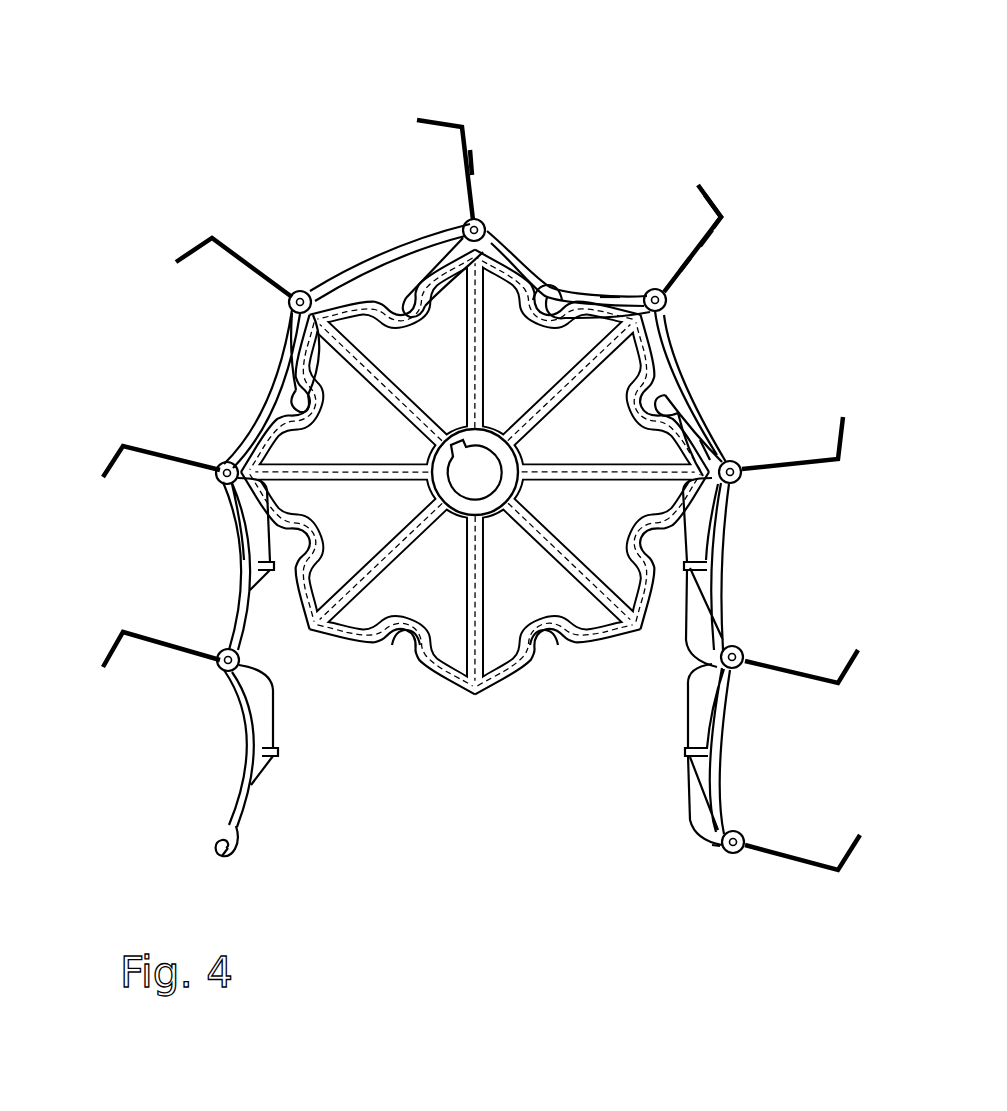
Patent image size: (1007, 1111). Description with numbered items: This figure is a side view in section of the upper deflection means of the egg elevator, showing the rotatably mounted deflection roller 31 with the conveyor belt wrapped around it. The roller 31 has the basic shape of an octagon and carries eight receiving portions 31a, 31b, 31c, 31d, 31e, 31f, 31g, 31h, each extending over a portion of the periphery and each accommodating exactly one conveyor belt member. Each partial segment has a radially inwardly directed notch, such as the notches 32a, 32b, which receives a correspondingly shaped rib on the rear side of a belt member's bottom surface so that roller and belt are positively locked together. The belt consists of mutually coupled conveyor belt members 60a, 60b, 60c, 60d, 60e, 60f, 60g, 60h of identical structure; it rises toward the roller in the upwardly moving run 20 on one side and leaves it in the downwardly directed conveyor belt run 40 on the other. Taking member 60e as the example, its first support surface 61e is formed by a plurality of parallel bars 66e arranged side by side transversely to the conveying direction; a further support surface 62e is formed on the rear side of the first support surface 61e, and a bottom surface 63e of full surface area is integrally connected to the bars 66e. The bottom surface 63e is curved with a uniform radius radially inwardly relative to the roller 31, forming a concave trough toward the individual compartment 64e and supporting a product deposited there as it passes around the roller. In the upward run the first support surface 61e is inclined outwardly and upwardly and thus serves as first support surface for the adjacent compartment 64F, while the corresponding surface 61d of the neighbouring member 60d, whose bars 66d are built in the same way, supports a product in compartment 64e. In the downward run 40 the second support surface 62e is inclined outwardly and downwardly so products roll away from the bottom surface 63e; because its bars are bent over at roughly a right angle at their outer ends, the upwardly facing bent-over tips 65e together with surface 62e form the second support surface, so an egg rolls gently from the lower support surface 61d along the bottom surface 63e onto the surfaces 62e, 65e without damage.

The first linkage assembly 20 is at (213, 864).
The downwardly directed conveyor belt run 40 is at (690, 856).
The deflection roller 31 is at (338, 624).
The receiving portion 31a is at (426, 585).
The receiving portion 31b is at (355, 519).
The receiving portion 31c is at (355, 425).
The receiving portion 31d is at (426, 358).
The receiving portion 31e is at (525, 358).
The receiving portion 31f is at (594, 425).
The receiving portion 31g is at (594, 519).
The receiving portion 31h is at (525, 585).
The notch 32a is at (402, 652).
The notch 32b is at (552, 650).
The conveyor belt member 60a is at (267, 731).
The conveyor belt member 60b is at (262, 540).
The conveyor belt member 60c is at (300, 388).
The conveyor belt member 60d is at (398, 297).
The conveyor belt member 60e is at (600, 305).
The conveyor belt member 60f is at (660, 401).
The conveyor belt member 60g is at (708, 578).
The conveyor belt member 60h is at (702, 768).
The first support surface 61d is at (470, 158).
The first support surface 61e is at (706, 261).
The second support surface 62e is at (680, 253).
The bottom surface 63e is at (560, 268).
The individual compartment 64e is at (558, 216).
The adjacent individual compartment 64F is at (738, 387).
The bent-over tips 65e is at (694, 205).
The arm segment 66d is at (478, 146).
The parallel bars 66e is at (700, 245).